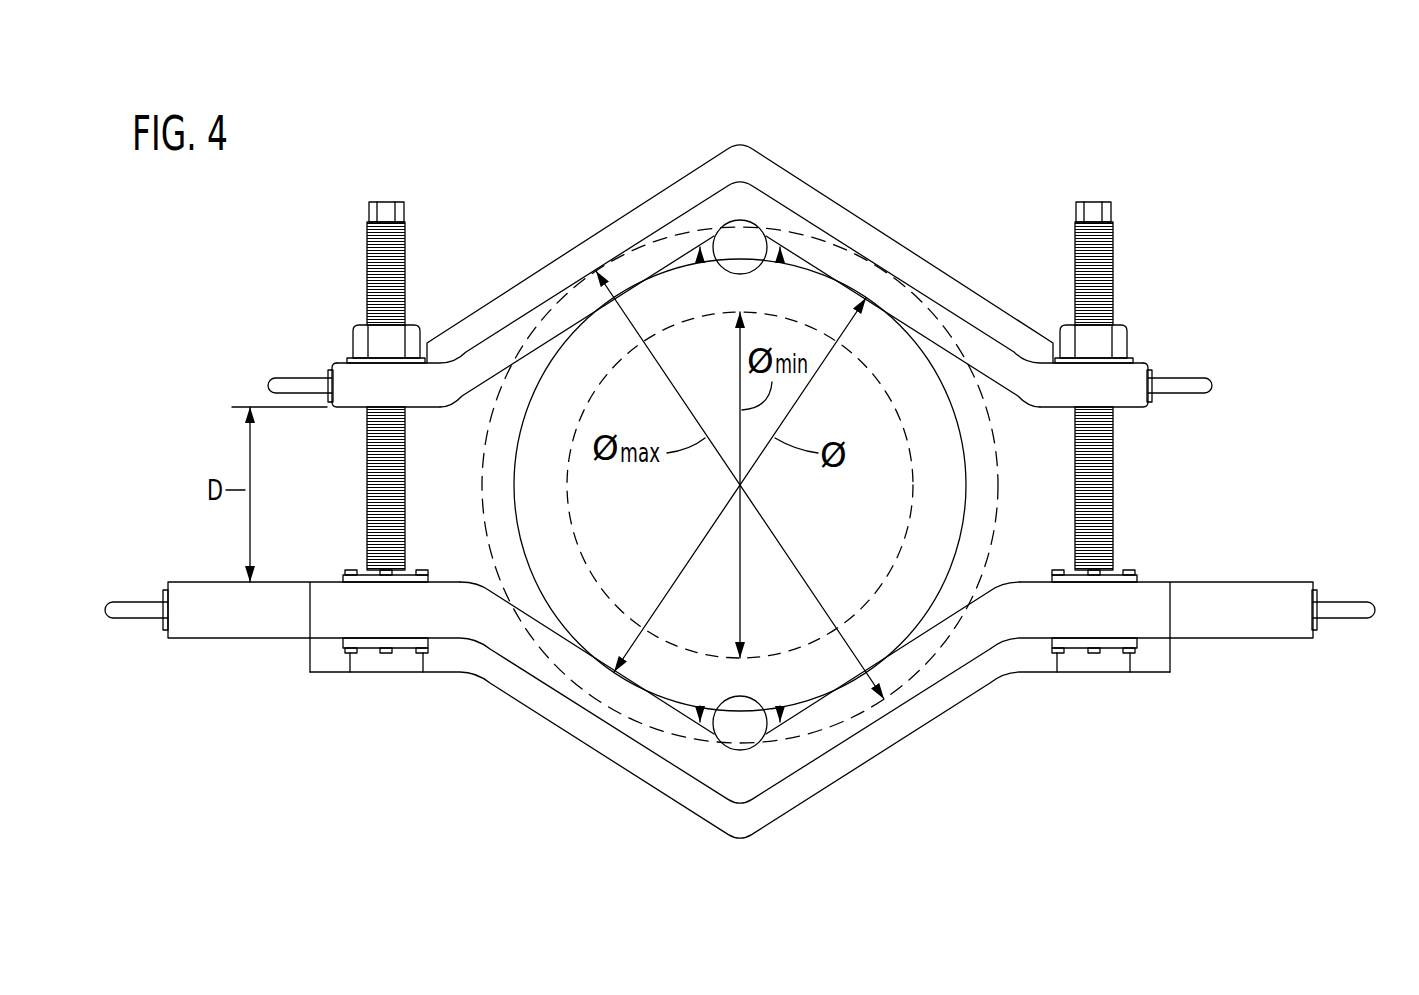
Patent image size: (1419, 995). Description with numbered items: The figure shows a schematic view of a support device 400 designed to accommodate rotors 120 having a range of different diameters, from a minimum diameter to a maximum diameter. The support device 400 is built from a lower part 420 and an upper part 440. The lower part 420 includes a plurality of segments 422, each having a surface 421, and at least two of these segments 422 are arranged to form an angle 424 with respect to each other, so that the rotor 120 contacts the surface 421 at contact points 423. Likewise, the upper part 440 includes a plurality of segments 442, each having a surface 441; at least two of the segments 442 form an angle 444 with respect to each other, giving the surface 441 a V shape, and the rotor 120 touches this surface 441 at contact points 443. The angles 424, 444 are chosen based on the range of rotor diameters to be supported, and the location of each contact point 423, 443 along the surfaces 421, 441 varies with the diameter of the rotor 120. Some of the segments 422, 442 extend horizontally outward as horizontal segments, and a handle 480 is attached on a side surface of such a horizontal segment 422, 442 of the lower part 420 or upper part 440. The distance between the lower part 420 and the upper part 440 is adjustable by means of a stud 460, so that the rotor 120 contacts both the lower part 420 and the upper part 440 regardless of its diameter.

The support device 400 is at (1181, 80).
The upper part 440 is at (546, 218).
The surface 441 is at (802, 212).
The segments 442 is at (338, 360).
The contact points 443 is at (614, 299).
The angle 444 is at (745, 272).
The lower part 420 is at (658, 829).
The surface 421 is at (590, 745).
The segments 422 is at (447, 582).
The contact points 423 is at (620, 673).
The angle 424 is at (737, 698).
The stud 460 is at (367, 256).
The handle 480 is at (298, 378).
The rotor 120 is at (843, 523).